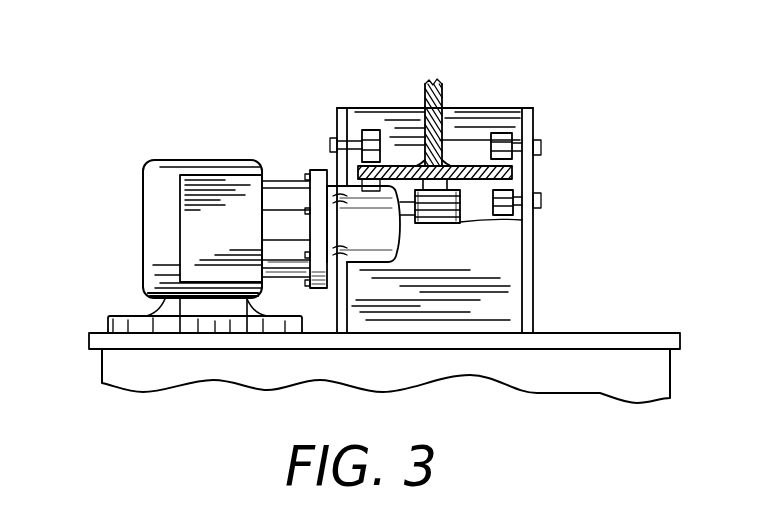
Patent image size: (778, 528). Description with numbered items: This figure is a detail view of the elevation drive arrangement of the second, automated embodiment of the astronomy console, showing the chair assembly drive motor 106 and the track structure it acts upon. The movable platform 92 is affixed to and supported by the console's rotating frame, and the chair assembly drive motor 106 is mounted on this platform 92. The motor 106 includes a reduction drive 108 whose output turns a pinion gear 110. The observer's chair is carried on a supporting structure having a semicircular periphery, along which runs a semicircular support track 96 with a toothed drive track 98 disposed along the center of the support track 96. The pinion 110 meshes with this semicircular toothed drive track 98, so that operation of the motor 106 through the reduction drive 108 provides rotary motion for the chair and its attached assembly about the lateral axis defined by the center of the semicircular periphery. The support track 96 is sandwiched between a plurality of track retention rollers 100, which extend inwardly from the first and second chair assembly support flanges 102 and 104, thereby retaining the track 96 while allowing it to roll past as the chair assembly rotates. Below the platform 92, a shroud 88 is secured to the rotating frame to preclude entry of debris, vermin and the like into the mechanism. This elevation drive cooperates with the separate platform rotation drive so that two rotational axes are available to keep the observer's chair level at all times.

The shroud 88 is at (672, 378).
The movable platform 92 is at (645, 333).
The semicircular support track 96 is at (458, 164).
The toothed drive track 98 is at (474, 165).
The track retention rollers 100 is at (369, 129).
The first chair assembly support flange 102 is at (337, 125).
The second chair assembly support flange 104 is at (534, 262).
The chair assembly drive motor 106 is at (143, 183).
The reduction drive 108 is at (331, 168).
The pinion gear 110 is at (542, 197).